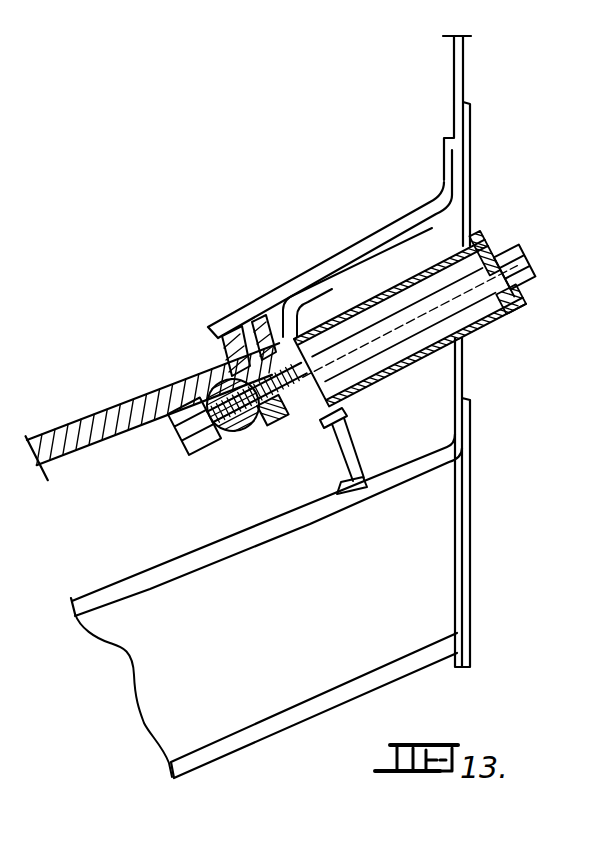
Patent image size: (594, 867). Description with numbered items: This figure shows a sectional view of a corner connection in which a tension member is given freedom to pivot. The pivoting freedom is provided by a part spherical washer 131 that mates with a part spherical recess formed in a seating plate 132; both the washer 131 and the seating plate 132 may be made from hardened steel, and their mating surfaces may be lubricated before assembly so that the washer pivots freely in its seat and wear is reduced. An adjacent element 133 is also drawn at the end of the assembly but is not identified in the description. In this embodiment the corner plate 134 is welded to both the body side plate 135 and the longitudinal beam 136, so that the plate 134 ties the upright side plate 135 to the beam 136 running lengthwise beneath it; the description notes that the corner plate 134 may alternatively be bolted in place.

The part spherical washer 131 is at (438, 303).
The seating plate 132 is at (512, 266).
The end flange 133 is at (486, 243).
The corner plate 134 is at (335, 261).
The body side plate 135 is at (453, 58).
The longitudinal beam 136 is at (266, 338).